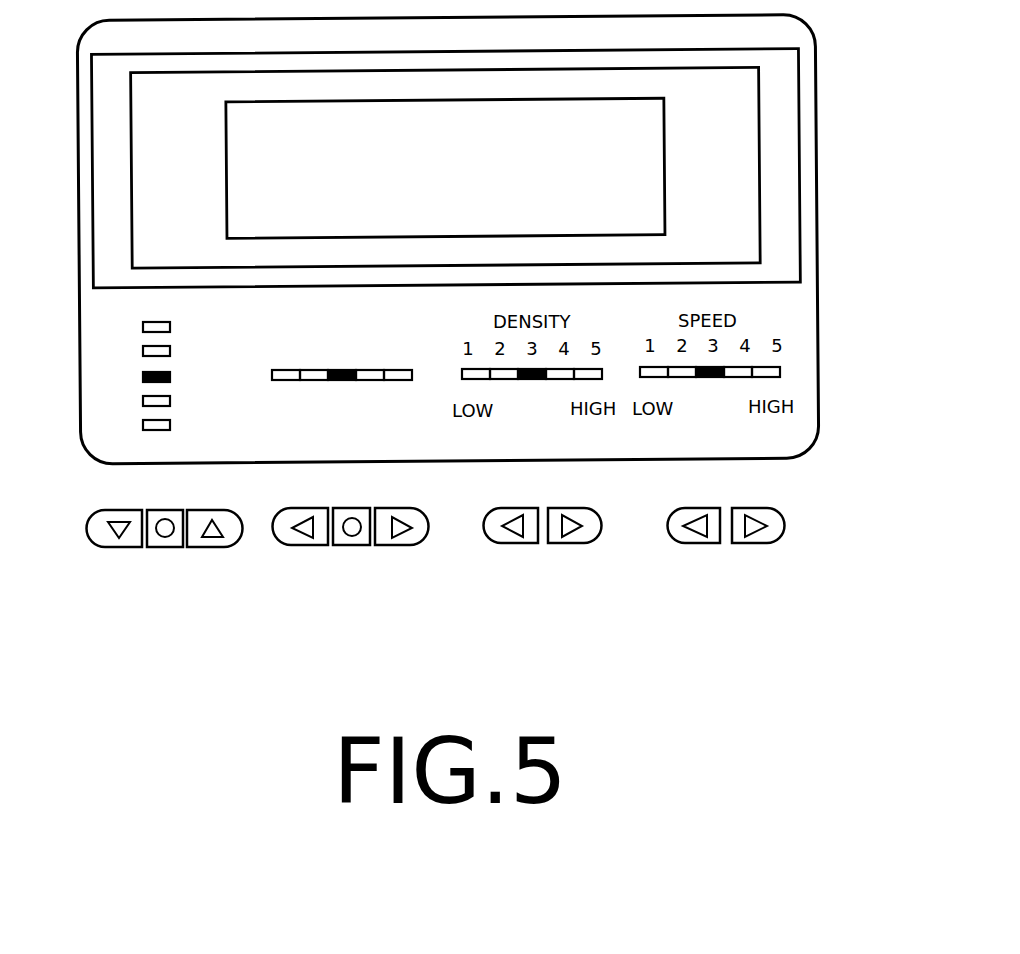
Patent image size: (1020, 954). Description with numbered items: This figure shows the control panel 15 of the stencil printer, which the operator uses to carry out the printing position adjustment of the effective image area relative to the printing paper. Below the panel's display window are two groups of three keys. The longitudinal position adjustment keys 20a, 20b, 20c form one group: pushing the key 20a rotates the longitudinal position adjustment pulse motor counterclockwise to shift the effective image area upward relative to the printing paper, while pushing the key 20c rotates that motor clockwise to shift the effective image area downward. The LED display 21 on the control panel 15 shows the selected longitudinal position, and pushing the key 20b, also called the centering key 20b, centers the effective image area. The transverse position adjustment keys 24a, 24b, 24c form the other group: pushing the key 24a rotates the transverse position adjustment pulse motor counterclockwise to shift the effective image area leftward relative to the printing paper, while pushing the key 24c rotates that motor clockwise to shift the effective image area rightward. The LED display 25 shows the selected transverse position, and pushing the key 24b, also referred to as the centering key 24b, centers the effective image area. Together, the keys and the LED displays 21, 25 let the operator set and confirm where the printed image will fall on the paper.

The control panel 15 is at (817, 65).
The LED display 25 is at (148, 430).
The LED display 21 is at (308, 382).
The transverse position adjustment key 24a is at (113, 547).
The centering key 24b is at (157, 547).
The transverse position adjustment key 24c is at (203, 547).
The longitudinal position adjustment key 20a is at (310, 545).
The centering key 20b is at (352, 545).
The longitudinal position adjustment key 20c is at (407, 545).